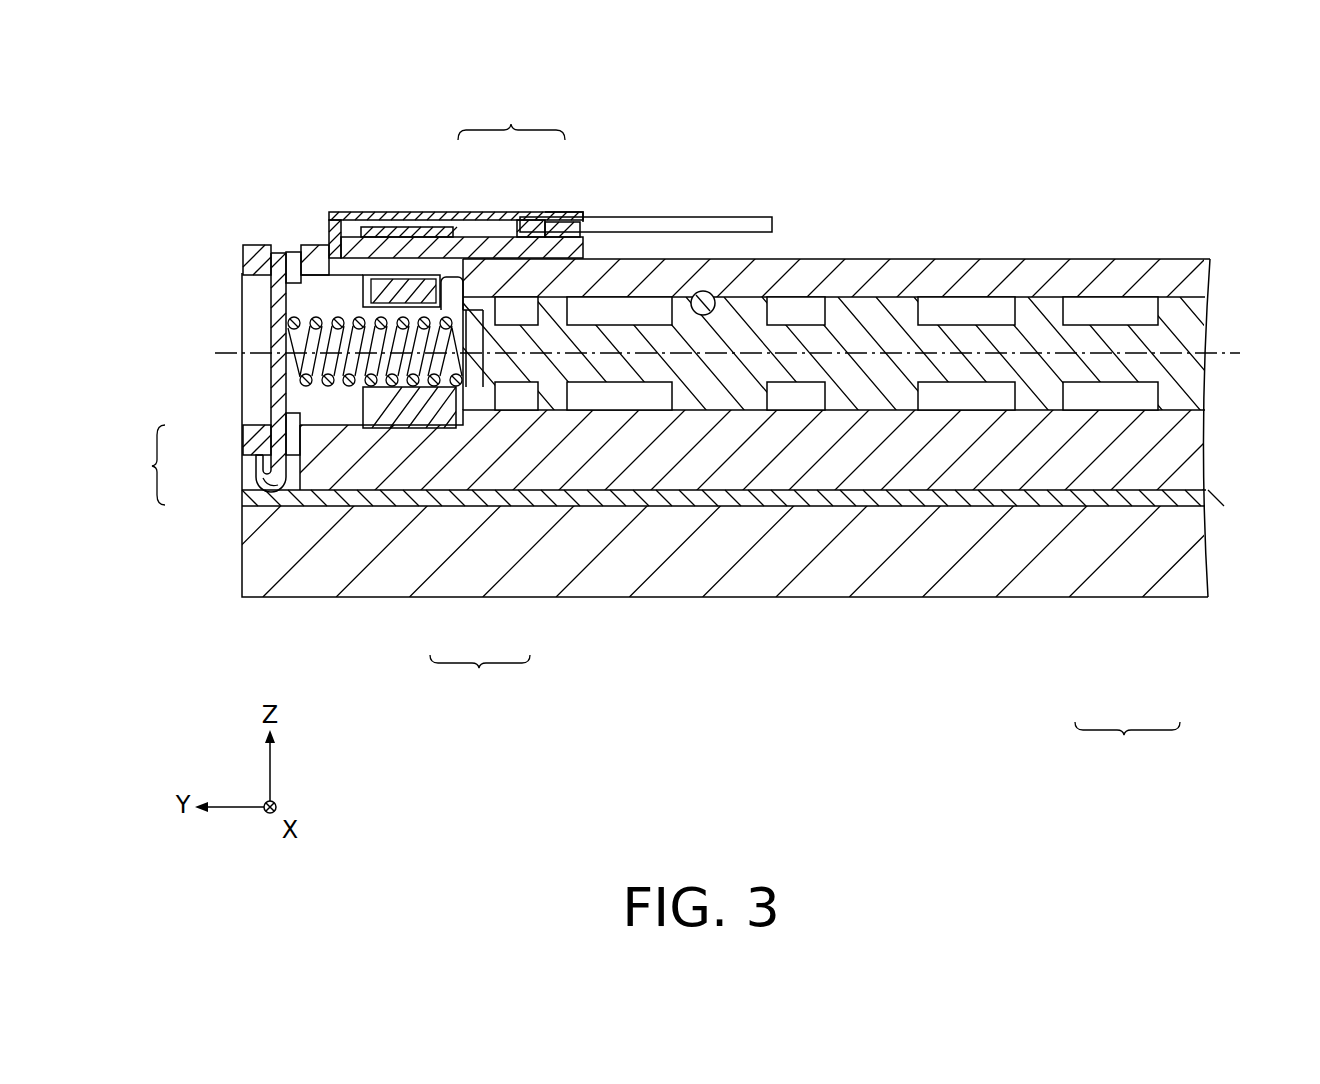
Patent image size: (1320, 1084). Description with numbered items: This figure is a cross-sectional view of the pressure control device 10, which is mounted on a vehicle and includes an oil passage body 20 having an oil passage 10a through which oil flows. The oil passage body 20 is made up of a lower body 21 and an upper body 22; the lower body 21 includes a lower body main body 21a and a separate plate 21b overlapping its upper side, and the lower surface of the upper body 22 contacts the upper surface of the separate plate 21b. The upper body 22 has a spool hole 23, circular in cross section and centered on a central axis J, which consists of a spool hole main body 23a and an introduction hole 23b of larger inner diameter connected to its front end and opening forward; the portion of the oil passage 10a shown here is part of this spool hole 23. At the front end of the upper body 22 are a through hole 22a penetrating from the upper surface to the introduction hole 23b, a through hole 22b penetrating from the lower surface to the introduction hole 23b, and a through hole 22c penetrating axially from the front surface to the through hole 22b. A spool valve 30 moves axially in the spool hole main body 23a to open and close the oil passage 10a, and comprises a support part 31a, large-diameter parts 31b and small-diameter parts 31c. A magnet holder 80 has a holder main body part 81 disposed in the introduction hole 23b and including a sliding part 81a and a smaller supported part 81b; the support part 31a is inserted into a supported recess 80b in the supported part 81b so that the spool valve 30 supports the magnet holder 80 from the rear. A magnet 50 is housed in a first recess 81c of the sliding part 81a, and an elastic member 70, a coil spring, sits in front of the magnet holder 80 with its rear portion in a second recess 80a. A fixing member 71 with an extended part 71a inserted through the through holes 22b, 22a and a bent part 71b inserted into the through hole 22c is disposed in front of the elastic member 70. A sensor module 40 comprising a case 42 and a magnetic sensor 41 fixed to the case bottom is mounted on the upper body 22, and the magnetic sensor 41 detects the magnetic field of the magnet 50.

The pressure control device 10 is at (1150, 148).
The oil passage 10a is at (968, 403).
The oil passage body 20 is at (660, 461).
The lower body 21 is at (1092, 600).
The lower body main body 21a is at (785, 560).
The separate plate 21b is at (853, 506).
The upper body 22 is at (1140, 465).
The through hole 22a is at (274, 245).
The through hole 22b is at (302, 460).
The through hole 22c is at (262, 438).
The spool hole 23 is at (519, 163).
The spool hole main body 23a is at (537, 216).
The introduction hole 23b is at (480, 237).
The spool valve 30 is at (660, 429).
The support part 31a is at (545, 360).
The large-diameter part 31b is at (600, 396).
The small-diameter part 31c is at (708, 330).
The sensor module 40 is at (553, 205).
The magnetic sensor 41 is at (393, 283).
The case 42 is at (592, 221).
The magnet 50 is at (365, 276).
The elastic member 70 is at (292, 280).
The fixing member 71 is at (203, 381).
The extended part 71a is at (271, 365).
The bent part 71b is at (254, 483).
The magnet holder 80 is at (390, 430).
The second recess 80a is at (288, 366).
The supported recess 80b is at (466, 300).
The holder main body part 81 is at (446, 430).
The sliding part 81a is at (430, 402).
The supported part 81b is at (478, 312).
The first recess 81c is at (432, 290).
The central axis J is at (1238, 360).